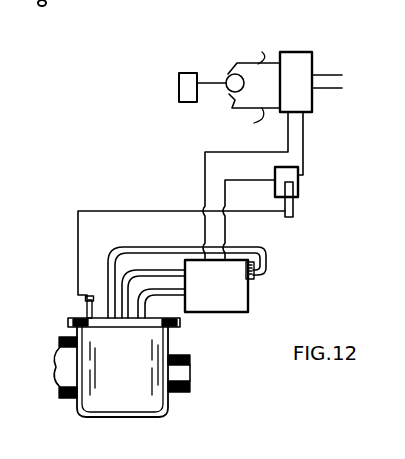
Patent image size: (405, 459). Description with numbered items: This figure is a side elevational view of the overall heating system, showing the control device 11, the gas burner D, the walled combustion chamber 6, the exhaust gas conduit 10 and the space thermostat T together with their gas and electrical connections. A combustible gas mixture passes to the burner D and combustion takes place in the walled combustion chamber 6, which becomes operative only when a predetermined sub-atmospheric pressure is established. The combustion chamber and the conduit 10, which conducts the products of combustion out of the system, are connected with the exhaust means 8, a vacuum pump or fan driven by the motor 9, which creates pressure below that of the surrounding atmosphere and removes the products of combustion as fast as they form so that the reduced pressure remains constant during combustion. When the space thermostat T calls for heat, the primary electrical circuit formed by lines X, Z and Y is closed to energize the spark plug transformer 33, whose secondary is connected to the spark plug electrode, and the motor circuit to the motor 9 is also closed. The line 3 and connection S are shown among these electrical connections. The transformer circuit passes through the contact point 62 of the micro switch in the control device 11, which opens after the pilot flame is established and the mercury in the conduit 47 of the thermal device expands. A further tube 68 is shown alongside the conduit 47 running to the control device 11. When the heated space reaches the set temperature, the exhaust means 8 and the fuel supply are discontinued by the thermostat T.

The exhaust means 8 is at (181, 80).
The motor 9 is at (231, 70).
The space thermostat T is at (296, 82).
The supply lines S is at (333, 81).
The primary circuit line z Z is at (308, 156).
The primary circuit line y Y is at (203, 172).
The primary circuit line x X is at (251, 181).
The spark plug transformer 33 is at (298, 198).
The contact point 62 is at (85, 310).
The conduit 47 is at (118, 250).
The conduit 68 is at (138, 272).
The conduit 3 is at (173, 292).
The control device 11 is at (230, 300).
The gas burner D is at (145, 398).
The mounting bracket 6 is at (58, 342).
The conduit 10 is at (190, 372).